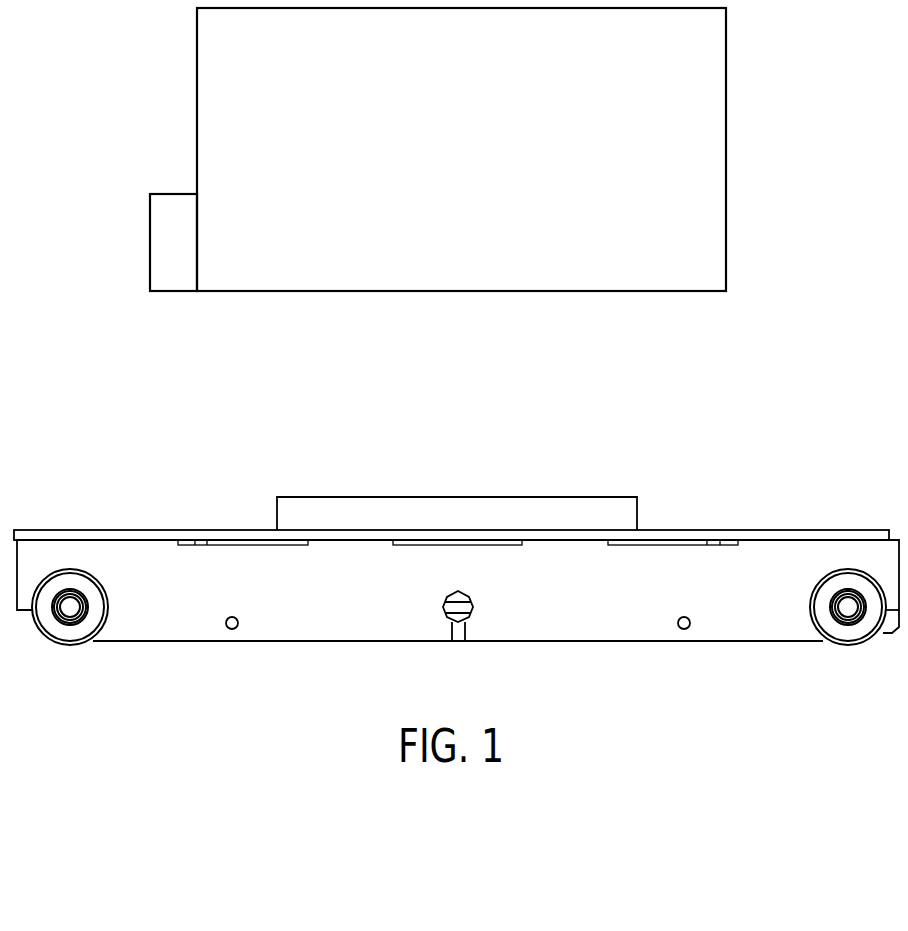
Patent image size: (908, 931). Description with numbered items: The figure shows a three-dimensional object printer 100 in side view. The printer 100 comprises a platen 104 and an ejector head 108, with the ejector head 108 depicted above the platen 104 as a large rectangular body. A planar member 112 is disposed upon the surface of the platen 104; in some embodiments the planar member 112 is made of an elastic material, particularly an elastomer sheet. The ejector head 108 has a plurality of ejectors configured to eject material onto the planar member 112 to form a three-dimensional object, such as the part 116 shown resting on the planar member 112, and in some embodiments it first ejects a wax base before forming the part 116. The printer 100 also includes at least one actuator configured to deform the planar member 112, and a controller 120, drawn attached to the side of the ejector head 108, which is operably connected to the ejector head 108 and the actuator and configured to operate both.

The three-dimensional object printer 100 is at (88, 80).
The platen 104 is at (330, 605).
The ejector head 108 is at (711, 128).
The planar member 112 is at (719, 538).
The part 116 is at (592, 512).
The controller 120 is at (173, 240).